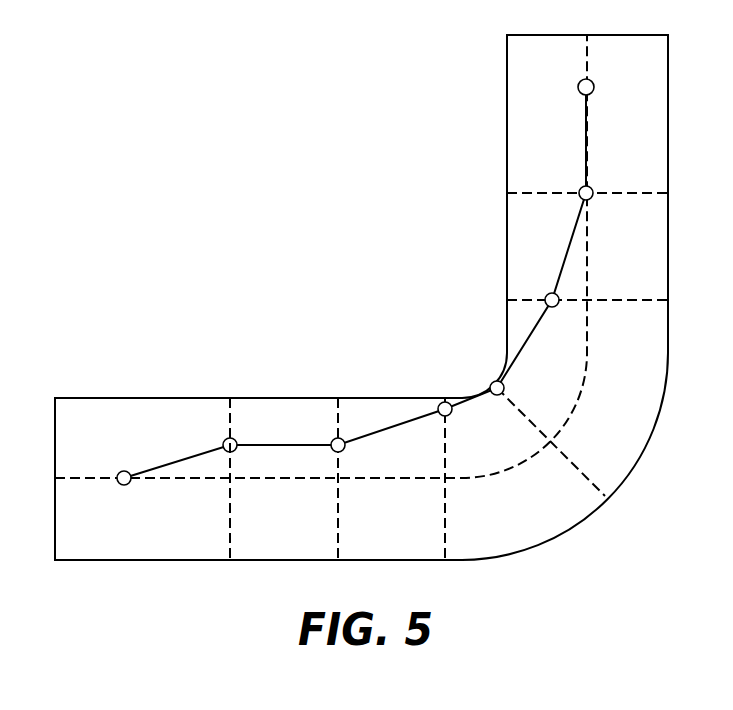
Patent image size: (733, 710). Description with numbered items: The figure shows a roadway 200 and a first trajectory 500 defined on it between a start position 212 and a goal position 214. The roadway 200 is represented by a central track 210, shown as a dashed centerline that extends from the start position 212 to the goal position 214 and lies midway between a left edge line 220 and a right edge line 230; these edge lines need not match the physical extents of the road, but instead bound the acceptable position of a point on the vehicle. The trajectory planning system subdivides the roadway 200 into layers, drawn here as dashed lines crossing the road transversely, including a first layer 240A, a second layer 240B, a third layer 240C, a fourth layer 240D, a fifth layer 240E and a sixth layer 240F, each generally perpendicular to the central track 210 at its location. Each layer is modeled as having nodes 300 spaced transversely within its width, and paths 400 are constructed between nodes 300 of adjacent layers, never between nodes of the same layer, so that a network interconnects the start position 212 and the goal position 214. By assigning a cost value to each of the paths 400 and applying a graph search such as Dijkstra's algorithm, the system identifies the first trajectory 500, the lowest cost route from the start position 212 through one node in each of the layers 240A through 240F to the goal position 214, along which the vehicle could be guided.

The roadway 200 is at (196, 121).
The central track 210 is at (62, 478).
The start position 212 is at (118, 474).
The goal position 214 is at (591, 79).
The left edge line 220 is at (170, 397).
The right edge line 230 is at (192, 561).
The first layer 240A is at (230, 398).
The second layer 240B is at (338, 398).
The third layer 240C is at (445, 398).
The fourth layer 240D is at (597, 489).
The fifth layer 240E is at (513, 300).
The sixth layer 240F is at (513, 193).
The nodes 300 is at (223, 443).
The paths 400 is at (250, 443).
The first trajectory 500 is at (306, 456).